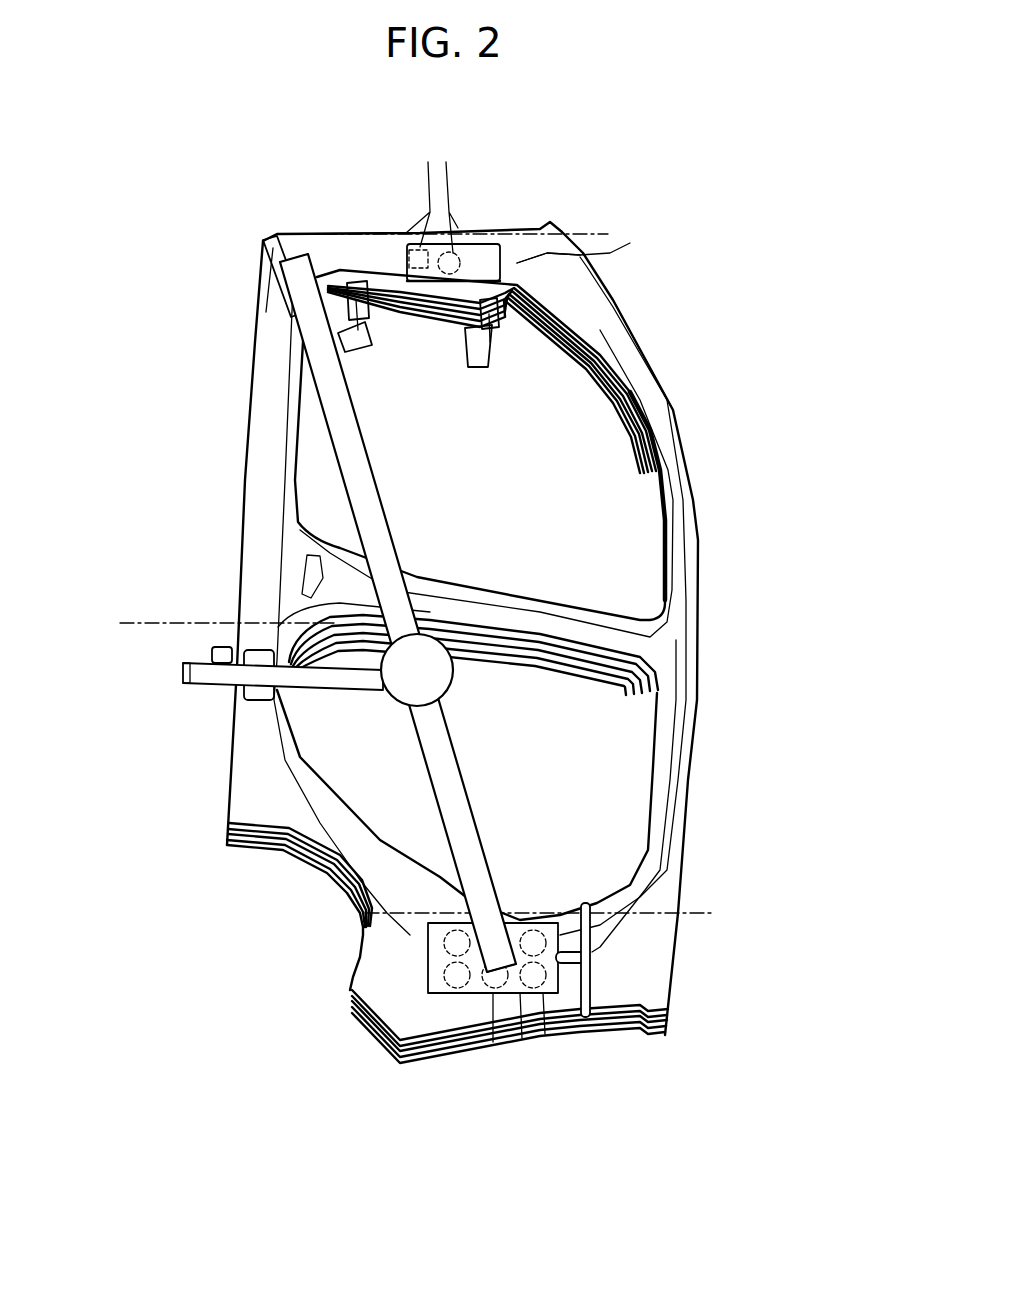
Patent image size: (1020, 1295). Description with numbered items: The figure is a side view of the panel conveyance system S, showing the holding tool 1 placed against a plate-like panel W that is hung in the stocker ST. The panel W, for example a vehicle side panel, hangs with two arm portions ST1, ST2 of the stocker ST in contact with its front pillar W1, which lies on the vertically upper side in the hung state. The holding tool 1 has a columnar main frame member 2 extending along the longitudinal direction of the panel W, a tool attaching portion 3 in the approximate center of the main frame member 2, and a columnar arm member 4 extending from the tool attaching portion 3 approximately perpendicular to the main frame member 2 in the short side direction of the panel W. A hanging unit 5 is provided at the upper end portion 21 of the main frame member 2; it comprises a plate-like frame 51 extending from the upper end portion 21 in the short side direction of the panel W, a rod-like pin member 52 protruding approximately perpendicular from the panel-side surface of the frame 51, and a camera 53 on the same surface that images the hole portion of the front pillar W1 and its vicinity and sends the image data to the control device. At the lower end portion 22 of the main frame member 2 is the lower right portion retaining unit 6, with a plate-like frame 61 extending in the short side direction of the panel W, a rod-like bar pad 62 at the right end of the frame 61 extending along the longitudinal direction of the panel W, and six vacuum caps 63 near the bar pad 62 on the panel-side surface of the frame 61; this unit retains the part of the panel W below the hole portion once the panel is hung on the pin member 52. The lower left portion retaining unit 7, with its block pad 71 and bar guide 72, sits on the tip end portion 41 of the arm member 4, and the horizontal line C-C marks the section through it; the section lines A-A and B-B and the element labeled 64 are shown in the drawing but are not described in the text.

The holding tool 1 is at (392, 466).
The main frame member 2 is at (388, 540).
The tool attaching portion 3 is at (441, 680).
The arm member 4 is at (338, 683).
The hanging unit 5 is at (248, 186).
The lower right portion retaining unit 6 is at (475, 1033).
The lower left portion retaining unit 7 is at (243, 717).
The upper end portion 21 is at (293, 280).
The lower end portion 22 is at (493, 903).
The tip end portion 41 is at (189, 681).
The frame 51 is at (276, 247).
The pin member 52 is at (451, 251).
The camera 53 is at (420, 247).
The frame 61 is at (437, 950).
The bar pad 62 is at (565, 1009).
The vacuum caps 63 is at (460, 984).
The stub 64 is at (574, 964).
The block pad 71 is at (263, 700).
The bar guide 72 is at (212, 656).
The stocker ST is at (443, 189).
The arm portion ST1 is at (490, 336).
The arm portion ST2 is at (352, 322).
The panel W is at (604, 293).
The front pillar W1 is at (594, 250).
The section A- A is at (593, 218).
The section B- B is at (709, 899).
The horizontal line C- C is at (328, 609).
The panel conveyance system S is at (729, 156).